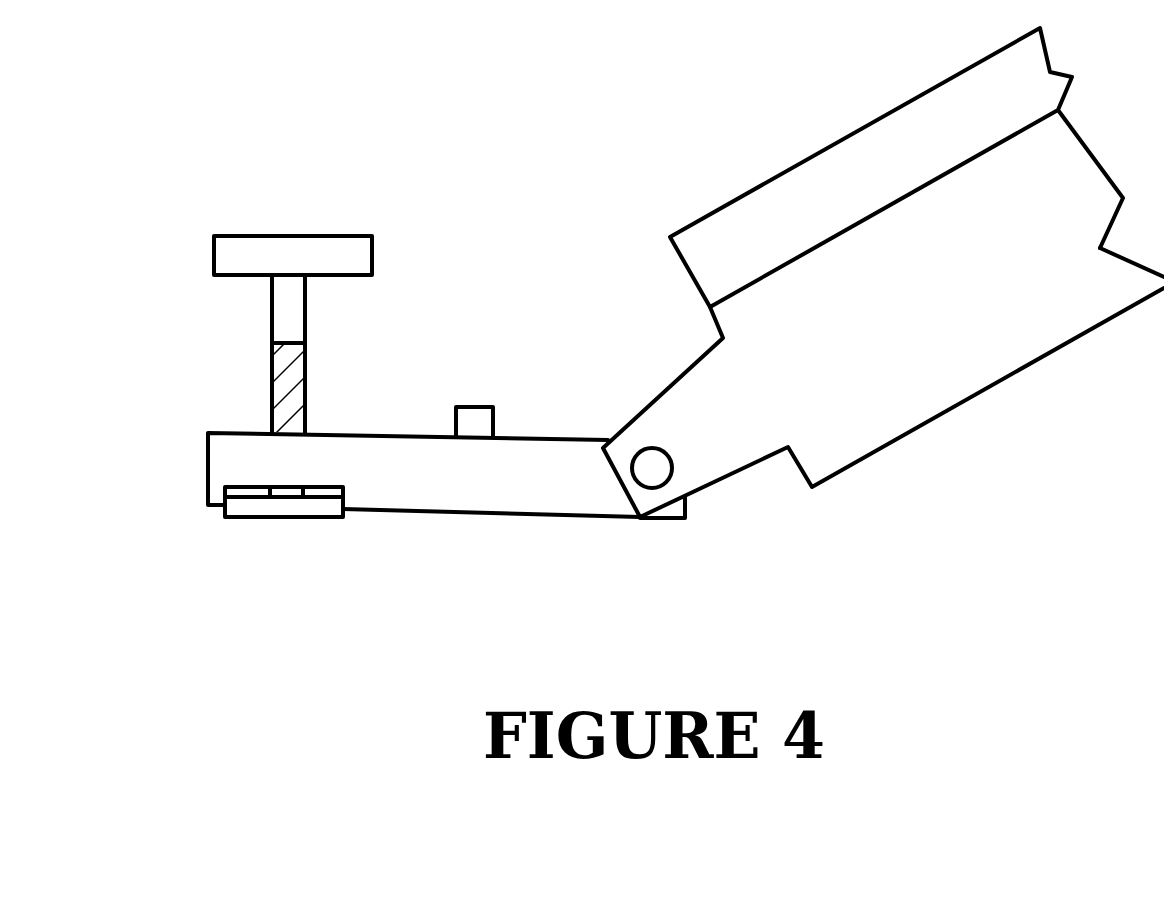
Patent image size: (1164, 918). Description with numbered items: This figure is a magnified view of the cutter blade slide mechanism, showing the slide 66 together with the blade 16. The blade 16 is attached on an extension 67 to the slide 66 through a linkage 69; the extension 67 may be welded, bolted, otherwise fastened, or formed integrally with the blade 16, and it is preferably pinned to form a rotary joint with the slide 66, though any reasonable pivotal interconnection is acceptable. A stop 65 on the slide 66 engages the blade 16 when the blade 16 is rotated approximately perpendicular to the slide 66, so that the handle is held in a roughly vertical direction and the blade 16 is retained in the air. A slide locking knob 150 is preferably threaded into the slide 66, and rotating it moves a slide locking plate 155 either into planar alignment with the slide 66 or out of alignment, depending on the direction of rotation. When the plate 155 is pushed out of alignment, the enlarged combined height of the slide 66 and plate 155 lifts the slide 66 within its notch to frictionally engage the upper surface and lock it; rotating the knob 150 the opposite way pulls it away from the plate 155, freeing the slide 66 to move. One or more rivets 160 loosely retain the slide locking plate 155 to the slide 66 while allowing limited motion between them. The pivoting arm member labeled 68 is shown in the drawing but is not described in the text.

The blade 16 is at (773, 270).
The stop 65 is at (480, 407).
The slide 66 is at (556, 438).
The extension 67 is at (763, 462).
The pivot arm 68 is at (955, 408).
The linkage 69 is at (643, 447).
The slide locking knob 150 is at (275, 236).
The slide locking plate 155 is at (298, 517).
The rivets 160 is at (303, 497).